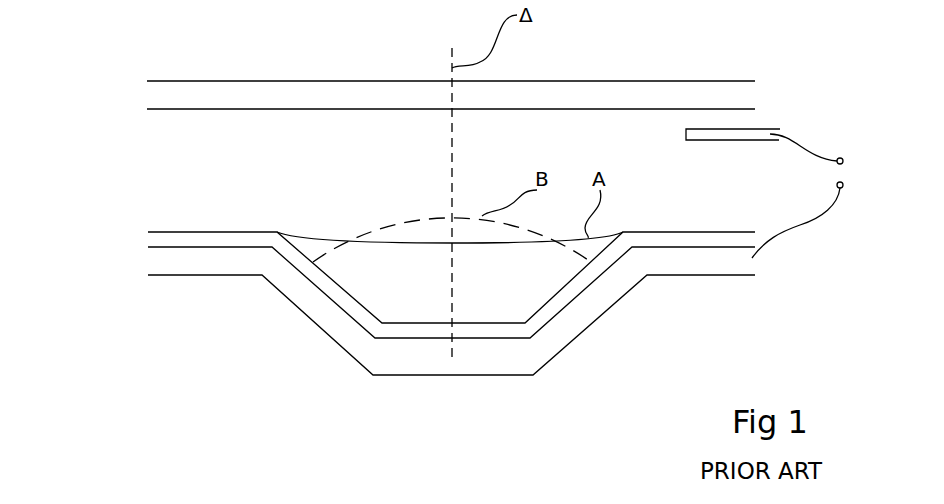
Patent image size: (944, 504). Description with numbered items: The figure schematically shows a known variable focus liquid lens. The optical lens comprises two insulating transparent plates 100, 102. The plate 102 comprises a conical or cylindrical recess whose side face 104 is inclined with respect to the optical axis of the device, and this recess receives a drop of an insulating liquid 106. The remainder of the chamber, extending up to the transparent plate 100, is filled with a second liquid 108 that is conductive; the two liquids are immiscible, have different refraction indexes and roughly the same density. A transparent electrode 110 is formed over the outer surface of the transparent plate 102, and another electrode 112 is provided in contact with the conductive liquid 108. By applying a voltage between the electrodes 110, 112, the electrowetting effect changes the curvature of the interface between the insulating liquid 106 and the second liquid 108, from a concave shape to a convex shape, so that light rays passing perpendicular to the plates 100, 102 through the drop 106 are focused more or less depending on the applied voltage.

The insulating transparent plate 100 is at (451, 75).
The insulating transparent plate 102 is at (155, 240).
The side face 104 is at (307, 247).
The insulating liquid 106 is at (408, 263).
The second liquid 108 is at (268, 130).
The transparent electrode 110 is at (197, 260).
The electrode 112 is at (752, 132).